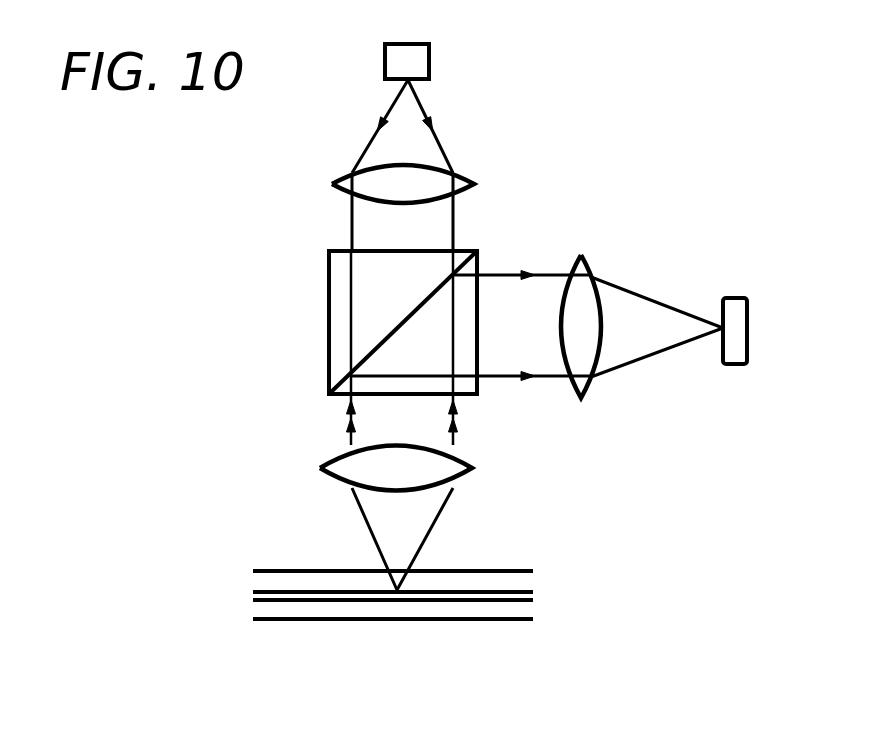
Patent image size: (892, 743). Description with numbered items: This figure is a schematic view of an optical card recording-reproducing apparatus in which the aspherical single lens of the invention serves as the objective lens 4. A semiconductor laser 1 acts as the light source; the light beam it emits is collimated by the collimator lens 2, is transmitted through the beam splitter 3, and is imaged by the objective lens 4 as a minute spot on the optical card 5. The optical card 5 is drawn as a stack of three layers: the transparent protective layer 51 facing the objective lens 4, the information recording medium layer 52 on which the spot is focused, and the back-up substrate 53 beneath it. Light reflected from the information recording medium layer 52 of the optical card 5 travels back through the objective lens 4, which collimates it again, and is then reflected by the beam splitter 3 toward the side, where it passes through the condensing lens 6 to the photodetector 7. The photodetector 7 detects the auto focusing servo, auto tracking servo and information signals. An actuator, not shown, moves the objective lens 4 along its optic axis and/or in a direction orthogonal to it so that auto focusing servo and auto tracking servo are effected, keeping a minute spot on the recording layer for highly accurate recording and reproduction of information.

The semiconductor laser 1 is at (429, 72).
The collimator lens 2 is at (474, 184).
The beam splitter 3 is at (470, 251).
The objective lens 4 is at (322, 466).
The optical card 5 is at (359, 582).
The transparent protective layer 51 is at (250, 580).
The information recording medium layer 52 is at (254, 591).
The back-up substrate 53 is at (371, 633).
The condensing lens 6 is at (590, 262).
The photodetector 7 is at (739, 297).